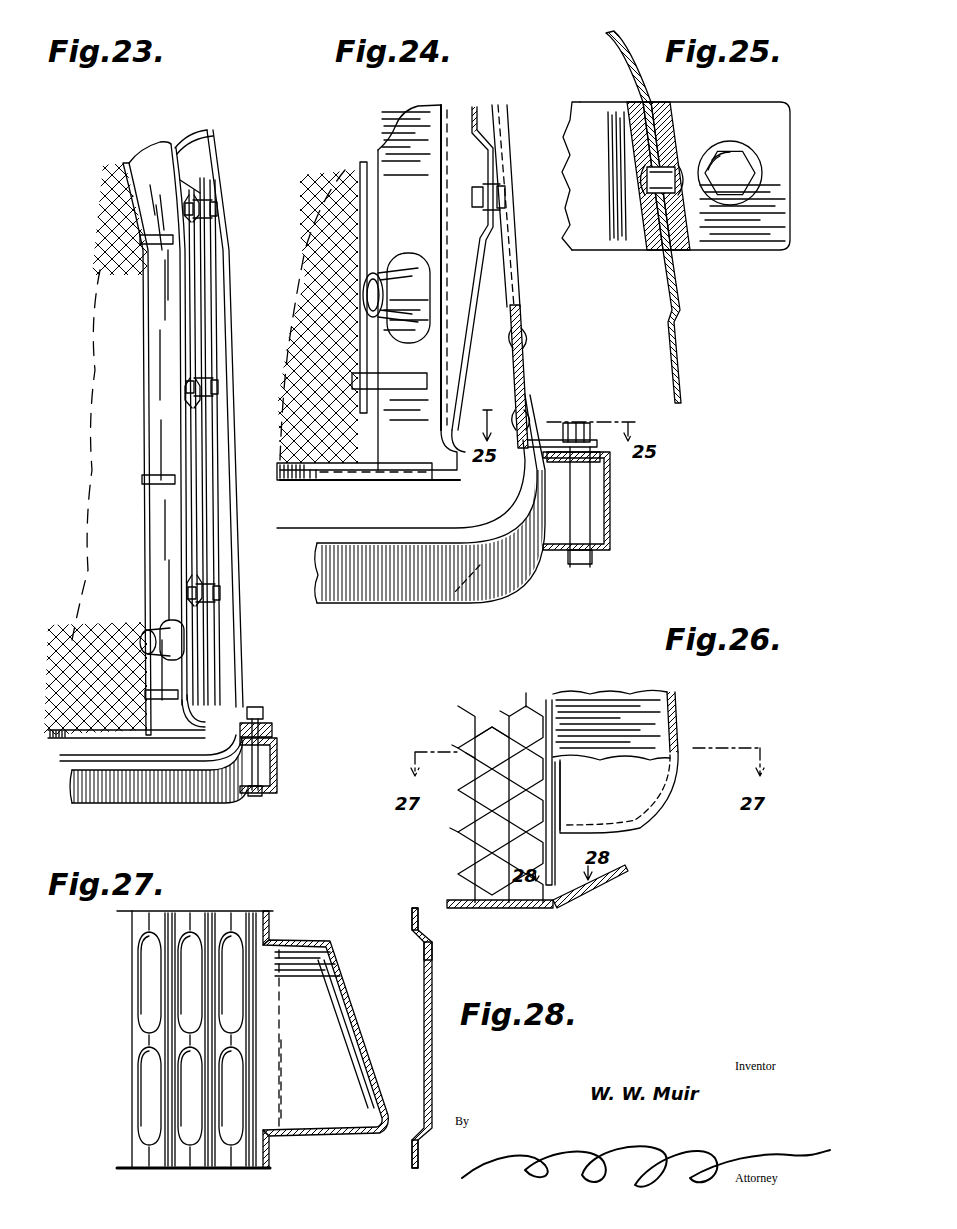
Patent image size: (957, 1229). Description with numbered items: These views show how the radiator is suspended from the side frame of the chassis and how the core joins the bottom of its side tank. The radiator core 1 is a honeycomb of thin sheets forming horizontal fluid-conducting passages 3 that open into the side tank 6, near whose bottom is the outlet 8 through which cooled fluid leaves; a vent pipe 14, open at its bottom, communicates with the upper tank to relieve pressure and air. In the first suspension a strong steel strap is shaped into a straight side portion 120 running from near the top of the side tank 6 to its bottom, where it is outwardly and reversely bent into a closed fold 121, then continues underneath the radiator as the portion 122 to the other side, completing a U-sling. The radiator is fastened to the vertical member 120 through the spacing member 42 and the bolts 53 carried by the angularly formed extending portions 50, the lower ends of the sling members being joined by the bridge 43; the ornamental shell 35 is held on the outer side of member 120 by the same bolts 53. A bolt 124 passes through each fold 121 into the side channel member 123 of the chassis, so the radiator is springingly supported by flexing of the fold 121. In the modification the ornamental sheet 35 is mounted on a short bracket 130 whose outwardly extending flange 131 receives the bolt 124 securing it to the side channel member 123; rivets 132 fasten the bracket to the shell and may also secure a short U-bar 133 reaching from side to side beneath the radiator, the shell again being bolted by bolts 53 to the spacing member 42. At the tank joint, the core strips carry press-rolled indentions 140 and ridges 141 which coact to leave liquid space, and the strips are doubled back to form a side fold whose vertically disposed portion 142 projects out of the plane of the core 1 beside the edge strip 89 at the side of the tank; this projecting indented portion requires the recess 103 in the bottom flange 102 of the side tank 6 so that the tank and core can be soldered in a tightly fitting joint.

In FIG. 26, the radiator core 1 is at (514, 716).
In FIG. 26, the fluid-conducting passages 3 is at (498, 744).
In FIG. 23, the side tank 6 is at (165, 290).
In FIG. 24, the side tank 6 is at (412, 120).
In FIG. 26, the side tank 6 is at (670, 712).
In FIG. 27, the side tank 6 is at (350, 992).
In FIG. 23, the outlet 8 is at (145, 640).
In FIG. 24, the outlet 8 is at (370, 296).
In FIG. 23, the vent pipe 14 is at (143, 348).
In FIG. 24, the vent pipe 14 is at (360, 165).
In FIG. 23, the ornamental shell 35 is at (243, 660).
In FIG. 24, the ornamental shell 35 is at (527, 315).
In FIG. 25, the ornamental shell 35 is at (636, 80).
In FIG. 23, the spacing member 42 is at (197, 323).
In FIG. 24, the spacing member 42 is at (462, 108).
In FIG. 23, the bridge 43 is at (58, 740).
In FIG. 24, the bridge 43 is at (305, 485).
In FIG. 23, the extending portions 50 is at (217, 568).
In FIG. 23, the bolts 53 is at (197, 387).
In FIG. 24, the bolts 53 is at (475, 192).
In FIG. 26, the edge strip 89 is at (557, 818).
In FIG. 27, the edge strip 89 is at (271, 918).
In FIG. 28, the edge strip 89 is at (412, 920).
In FIG. 26, the bottom flange 102 is at (548, 890).
In FIG. 27, the bottom flange 102 is at (281, 1058).
In FIG. 28, the bottom flange 102 is at (432, 1075).
In FIG. 26, the recess 103 is at (570, 882).
In FIG. 28, the recess 103 is at (424, 1045).
In FIG. 23, the straight side portion 120 is at (212, 264).
In FIG. 23, the closed fold 121 is at (270, 723).
In FIG. 23, the strap portion passing underneath the radiator 122 is at (95, 756).
In FIG. 23, the side channel member 123 is at (278, 750).
In FIG. 24, the side channel member 123 is at (612, 508).
In FIG. 23, the bolt 124 is at (263, 707).
In FIG. 24, the bolt 124 is at (575, 422).
In FIG. 25, the bolt 124 is at (737, 160).
In FIG. 24, the short bracket 130 is at (528, 372).
In FIG. 25, the short bracket 130 is at (675, 118).
In FIG. 24, the outwardly extending flange 131 is at (550, 438).
In FIG. 25, the outwardly extending flange 131 is at (748, 104).
In FIG. 24, the rivets 132 is at (530, 340).
In FIG. 25, the rivets 132 is at (672, 168).
In FIG. 24, the short U-bar 133 is at (405, 522).
In FIG. 25, the short U-bar 133 is at (622, 150).
In FIG. 27, the indentions 140 is at (150, 990).
In FIG. 27, the ridges 141 is at (140, 922).
In FIG. 26, the vertically disposed fold portion 142 is at (563, 787).
In FIG. 27, the vertically disposed fold portion 142 is at (280, 990).